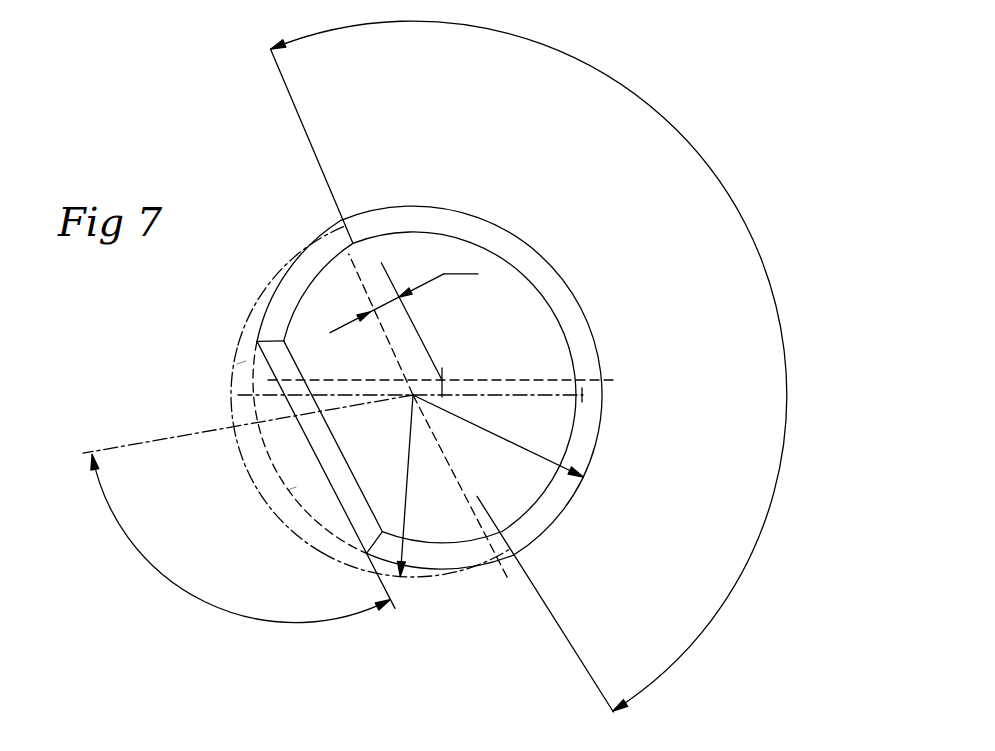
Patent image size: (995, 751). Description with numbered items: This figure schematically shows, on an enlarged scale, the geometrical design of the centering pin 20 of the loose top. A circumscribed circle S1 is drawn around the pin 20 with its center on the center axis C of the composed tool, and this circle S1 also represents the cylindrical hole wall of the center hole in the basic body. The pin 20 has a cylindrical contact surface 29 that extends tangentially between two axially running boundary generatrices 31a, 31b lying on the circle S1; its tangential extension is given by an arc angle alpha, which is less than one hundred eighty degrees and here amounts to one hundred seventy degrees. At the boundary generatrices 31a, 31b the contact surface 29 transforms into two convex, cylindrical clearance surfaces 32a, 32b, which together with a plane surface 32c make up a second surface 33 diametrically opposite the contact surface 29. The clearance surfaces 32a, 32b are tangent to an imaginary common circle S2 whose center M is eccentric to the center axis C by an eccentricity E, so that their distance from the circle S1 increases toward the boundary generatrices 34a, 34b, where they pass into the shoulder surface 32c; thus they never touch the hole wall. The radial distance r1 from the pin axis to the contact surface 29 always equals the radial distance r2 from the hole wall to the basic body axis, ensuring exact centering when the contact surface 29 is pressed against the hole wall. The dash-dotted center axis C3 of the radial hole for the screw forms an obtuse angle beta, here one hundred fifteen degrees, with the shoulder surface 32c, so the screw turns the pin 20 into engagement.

The centering pin 20 is at (465, 193).
The contact surface 29 is at (574, 290).
The boundary generatrix 31a is at (338, 220).
The boundary generatrix 31b is at (514, 557).
The clearance surface 32a is at (300, 250).
The clearance surface 32b is at (429, 568).
The shoulder surface 32c is at (323, 477).
The second surface 33 is at (263, 315).
The boundary generatrix 34a is at (256, 342).
The boundary generatrix 34b is at (365, 553).
The circumscribed circle S1 is at (237, 364).
The imaginary common circle S2 is at (288, 490).
The center axis C is at (411, 400).
The center axis of the radial hole C3 is at (134, 444).
The center of circle S2 M is at (447, 372).
The eccentricity E is at (404, 294).
The radial distance r1 is at (498, 436).
The radial distance r2 is at (413, 486).
The arc angle alpha is at (529, 366).
The obtuse angle beta is at (243, 545).